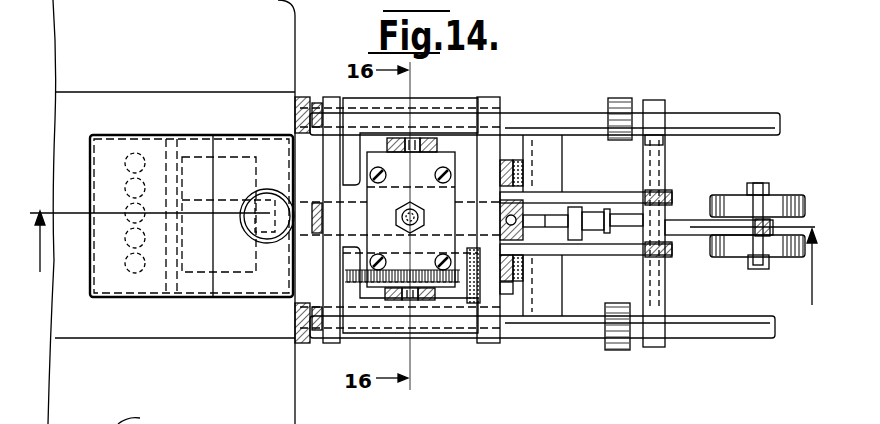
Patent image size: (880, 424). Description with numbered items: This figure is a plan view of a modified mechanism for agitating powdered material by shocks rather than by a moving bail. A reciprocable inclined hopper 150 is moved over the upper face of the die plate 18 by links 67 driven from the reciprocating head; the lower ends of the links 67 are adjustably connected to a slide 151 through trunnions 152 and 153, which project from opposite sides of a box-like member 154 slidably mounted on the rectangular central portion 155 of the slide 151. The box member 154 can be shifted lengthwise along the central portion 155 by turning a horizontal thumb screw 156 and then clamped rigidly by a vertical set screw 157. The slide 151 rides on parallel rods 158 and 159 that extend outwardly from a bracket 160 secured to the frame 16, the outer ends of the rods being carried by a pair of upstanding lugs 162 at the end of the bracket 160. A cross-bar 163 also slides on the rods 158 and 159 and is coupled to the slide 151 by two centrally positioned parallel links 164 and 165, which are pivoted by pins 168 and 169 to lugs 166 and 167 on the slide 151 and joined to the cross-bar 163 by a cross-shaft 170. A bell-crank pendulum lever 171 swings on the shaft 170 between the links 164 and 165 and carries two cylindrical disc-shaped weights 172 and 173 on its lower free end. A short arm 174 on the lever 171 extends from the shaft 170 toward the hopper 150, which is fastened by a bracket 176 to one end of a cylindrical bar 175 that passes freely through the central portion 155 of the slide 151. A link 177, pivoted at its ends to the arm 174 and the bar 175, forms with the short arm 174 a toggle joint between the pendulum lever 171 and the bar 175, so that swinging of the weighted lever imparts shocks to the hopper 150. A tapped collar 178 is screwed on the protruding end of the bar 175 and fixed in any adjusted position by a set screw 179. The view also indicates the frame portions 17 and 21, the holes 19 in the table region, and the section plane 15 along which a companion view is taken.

The section line 15- 15 is at (424, 273).
The frame 16 is at (282, 413).
The machine frame 17 is at (84, 102).
The die plate 18 is at (179, 292).
The table holes 19 is at (138, 272).
The housing 21 is at (286, 38).
The links 67 is at (437, 137).
The hopper 150 is at (258, 281).
The slide 151 is at (488, 140).
The trunnion 152 is at (414, 137).
The trunnion 153 is at (413, 301).
The box-like member 154 is at (410, 219).
The central portion 155 is at (357, 190).
The thumb screw 156 is at (479, 302).
The set screw 157 is at (427, 220).
The rod 158 is at (570, 118).
The rod 159 is at (558, 340).
The bracket 160 is at (300, 346).
The upstanding lugs 162 is at (622, 103).
The cross-bar 163 is at (660, 162).
The link 164 is at (623, 193).
The link 165 is at (613, 256).
The lug 166 is at (516, 168).
The lug 167 is at (518, 280).
The pin 168 is at (510, 165).
The pin 169 is at (507, 282).
The cross-shaft 170 is at (655, 177).
The bell-crank pendulum lever 171 is at (693, 230).
The weight 172 is at (778, 203).
The weight 173 is at (740, 248).
The short arm 174 is at (660, 205).
The cylindrical bar 175 is at (318, 220).
The bracket 176 is at (227, 160).
The link 177 is at (552, 223).
The tapped collar 178 is at (513, 272).
The set screw 179 is at (500, 207).